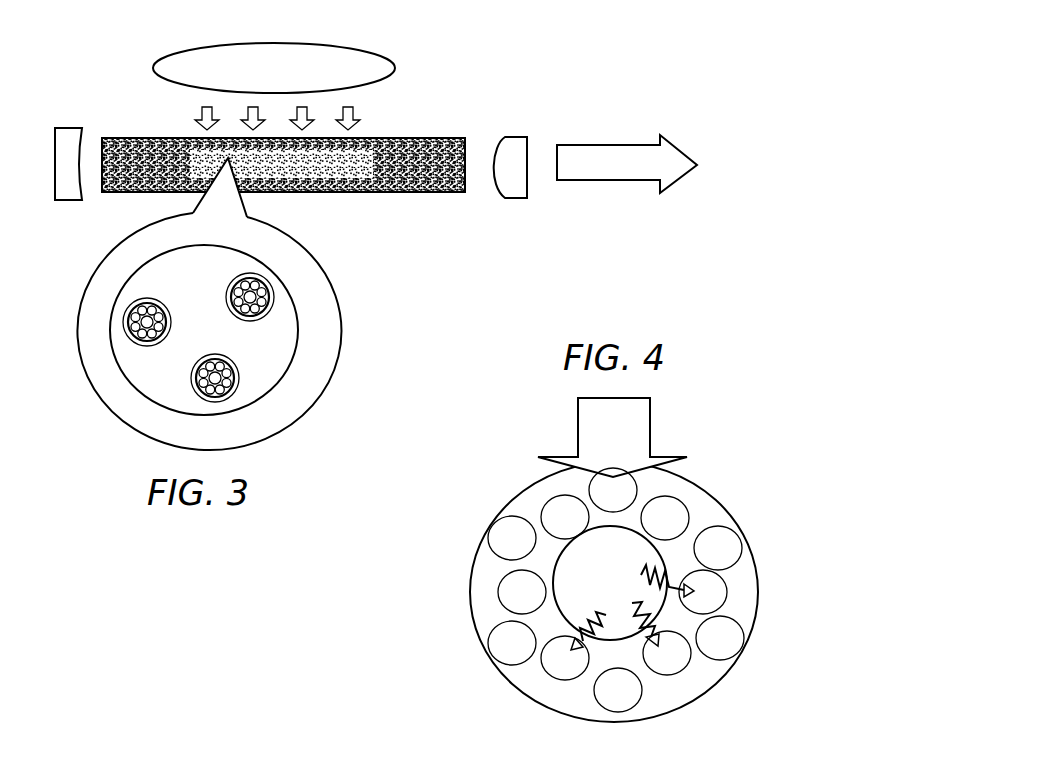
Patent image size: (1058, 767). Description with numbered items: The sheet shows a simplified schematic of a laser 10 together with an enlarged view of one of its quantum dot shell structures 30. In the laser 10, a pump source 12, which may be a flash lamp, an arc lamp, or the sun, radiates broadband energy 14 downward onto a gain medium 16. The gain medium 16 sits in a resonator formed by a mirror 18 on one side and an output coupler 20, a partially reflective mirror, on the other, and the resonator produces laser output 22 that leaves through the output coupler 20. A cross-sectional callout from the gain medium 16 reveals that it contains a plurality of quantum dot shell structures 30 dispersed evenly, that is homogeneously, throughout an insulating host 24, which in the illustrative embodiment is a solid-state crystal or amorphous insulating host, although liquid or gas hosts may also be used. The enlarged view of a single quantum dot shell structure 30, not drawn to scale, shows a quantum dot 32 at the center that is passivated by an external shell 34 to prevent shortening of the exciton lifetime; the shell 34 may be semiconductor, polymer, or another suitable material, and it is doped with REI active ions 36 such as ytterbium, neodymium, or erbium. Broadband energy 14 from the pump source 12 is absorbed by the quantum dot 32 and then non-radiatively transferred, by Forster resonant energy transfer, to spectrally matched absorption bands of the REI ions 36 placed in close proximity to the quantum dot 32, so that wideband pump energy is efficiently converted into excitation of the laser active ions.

In FIG. 3, the laser 10 is at (577, 93).
In FIG. 3, the pump source 12 is at (362, 62).
In FIG. 3, the broadband energy 14 is at (352, 111).
In FIG. 4, the broadband energy 14 is at (590, 418).
In FIG. 3, the gain medium 16 is at (140, 148).
In FIG. 3, the mirror 18 is at (76, 130).
In FIG. 3, the output coupler 20 is at (518, 148).
In FIG. 3, the laser output 22 is at (593, 158).
In FIG. 3, the insulating host 24 is at (277, 333).
In FIG. 3, the quantum dot shell structure 30 is at (142, 302).
In FIG. 4, the quantum dot shell structure 30 is at (695, 437).
In FIG. 4, the quantum dot 32 is at (646, 567).
In FIG. 4, the external shell 34 is at (676, 688).
In FIG. 4, the REI active ions 36 is at (505, 527).